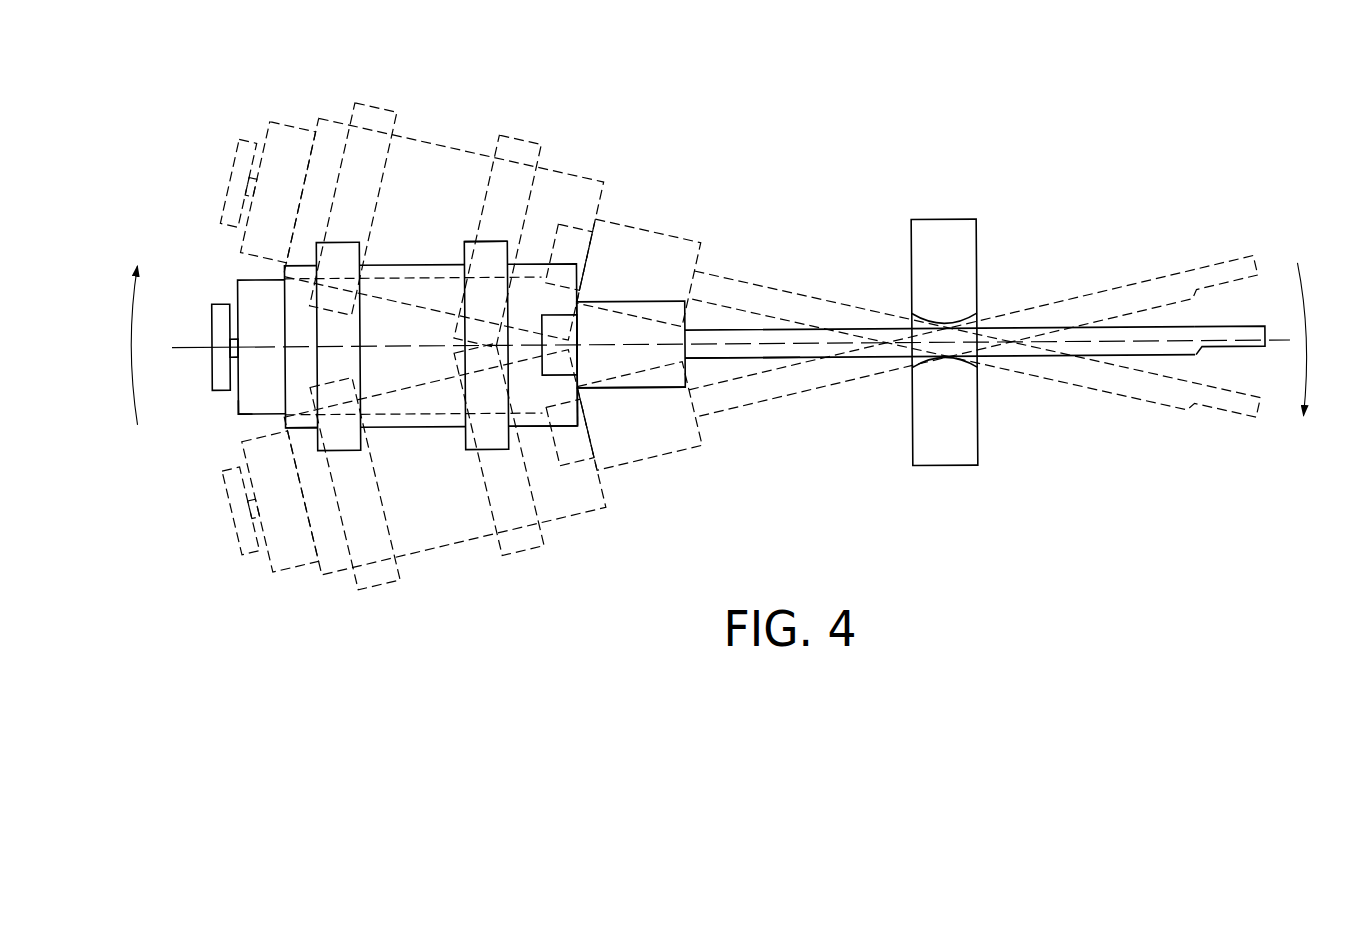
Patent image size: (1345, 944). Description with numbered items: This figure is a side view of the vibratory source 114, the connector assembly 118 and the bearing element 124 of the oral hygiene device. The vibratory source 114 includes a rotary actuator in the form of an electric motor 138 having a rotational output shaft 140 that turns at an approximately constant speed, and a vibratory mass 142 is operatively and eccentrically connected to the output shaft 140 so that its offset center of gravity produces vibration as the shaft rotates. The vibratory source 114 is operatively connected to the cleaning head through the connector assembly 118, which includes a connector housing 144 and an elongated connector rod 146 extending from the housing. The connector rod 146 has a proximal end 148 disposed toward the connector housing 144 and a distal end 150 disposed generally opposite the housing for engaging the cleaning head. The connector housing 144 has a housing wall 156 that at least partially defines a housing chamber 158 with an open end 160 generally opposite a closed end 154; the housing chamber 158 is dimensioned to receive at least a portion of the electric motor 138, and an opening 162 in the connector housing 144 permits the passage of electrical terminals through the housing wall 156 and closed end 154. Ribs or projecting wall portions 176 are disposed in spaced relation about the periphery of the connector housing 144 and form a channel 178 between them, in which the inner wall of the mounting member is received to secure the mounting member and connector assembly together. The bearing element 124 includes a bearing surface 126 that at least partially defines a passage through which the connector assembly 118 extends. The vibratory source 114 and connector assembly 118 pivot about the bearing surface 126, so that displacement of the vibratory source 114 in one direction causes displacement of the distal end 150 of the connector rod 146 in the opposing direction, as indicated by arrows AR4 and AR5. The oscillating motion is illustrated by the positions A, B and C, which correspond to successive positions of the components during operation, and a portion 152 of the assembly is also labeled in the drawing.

The vibratory source 114 is at (300, 257).
The connector assembly 118 is at (657, 300).
The bearing element 124 is at (943, 220).
The bearing surface 126 is at (943, 364).
The electric motor 138 is at (258, 289).
The rotational output shaft 140 is at (234, 337).
The vibratory mass 142 is at (217, 359).
The connector housing 144 is at (500, 237).
The elongated connector rod 146 is at (757, 329).
The proximal end 148 is at (740, 359).
The distal end 150 is at (1226, 329).
The coupling bottom wall 152 is at (668, 388).
The closed end 154 is at (578, 396).
The housing wall 156 is at (535, 426).
The housing chamber 158 is at (402, 276).
The open end 160 is at (298, 434).
The opening 162 is at (556, 321).
The projecting wall portions 176 is at (340, 449).
The channel 178 is at (438, 262).
The position A is at (258, 565).
The position B is at (231, 413).
The position C is at (251, 124).
The arrow AR4 is at (132, 382).
The arrow AR5 is at (1305, 297).